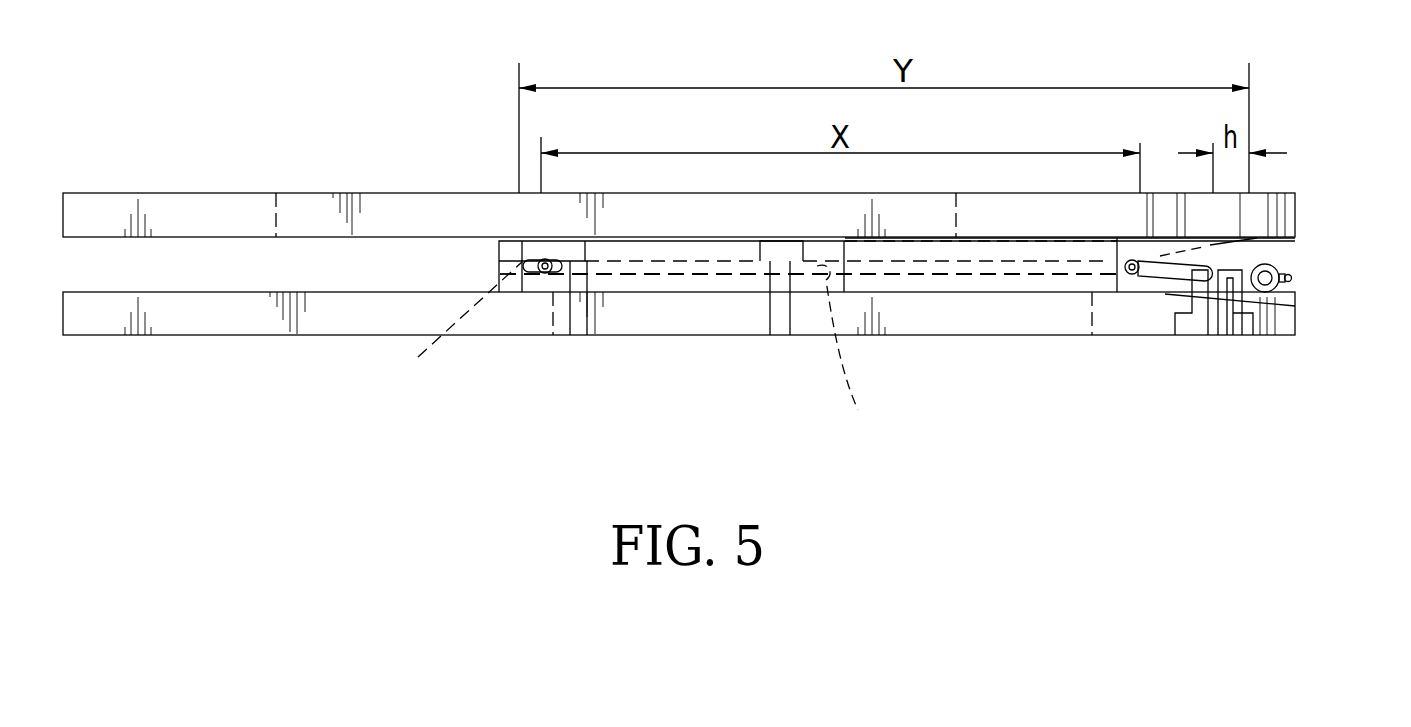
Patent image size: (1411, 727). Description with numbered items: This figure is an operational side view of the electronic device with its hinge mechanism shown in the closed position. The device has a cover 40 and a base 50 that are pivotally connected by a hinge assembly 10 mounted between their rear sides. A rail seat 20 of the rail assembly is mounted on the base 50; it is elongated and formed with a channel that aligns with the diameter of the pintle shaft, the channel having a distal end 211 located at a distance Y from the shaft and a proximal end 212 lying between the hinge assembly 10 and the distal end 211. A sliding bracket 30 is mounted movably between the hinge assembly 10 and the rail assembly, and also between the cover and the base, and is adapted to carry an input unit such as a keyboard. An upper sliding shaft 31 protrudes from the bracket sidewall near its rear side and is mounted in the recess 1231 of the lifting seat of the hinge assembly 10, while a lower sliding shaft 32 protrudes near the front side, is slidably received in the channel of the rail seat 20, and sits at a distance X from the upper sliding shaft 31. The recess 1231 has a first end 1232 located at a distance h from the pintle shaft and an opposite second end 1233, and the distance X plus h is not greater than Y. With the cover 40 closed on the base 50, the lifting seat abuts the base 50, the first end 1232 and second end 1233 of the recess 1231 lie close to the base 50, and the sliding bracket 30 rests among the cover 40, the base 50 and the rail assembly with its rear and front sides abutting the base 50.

The hinge assembly 10 is at (1282, 280).
The rail seat 20 is at (510, 250).
The sliding bracket 30 is at (927, 288).
The upper sliding shaft 31 is at (1130, 278).
The lower sliding shaft 32 is at (540, 272).
The cover 40 is at (323, 192).
The base 50 is at (313, 337).
The distal end 211 is at (443, 319).
The proximal end 212 is at (866, 347).
The recess 1231 is at (1178, 274).
The first end 1232 is at (1213, 271).
The second end 1233 is at (1120, 268).